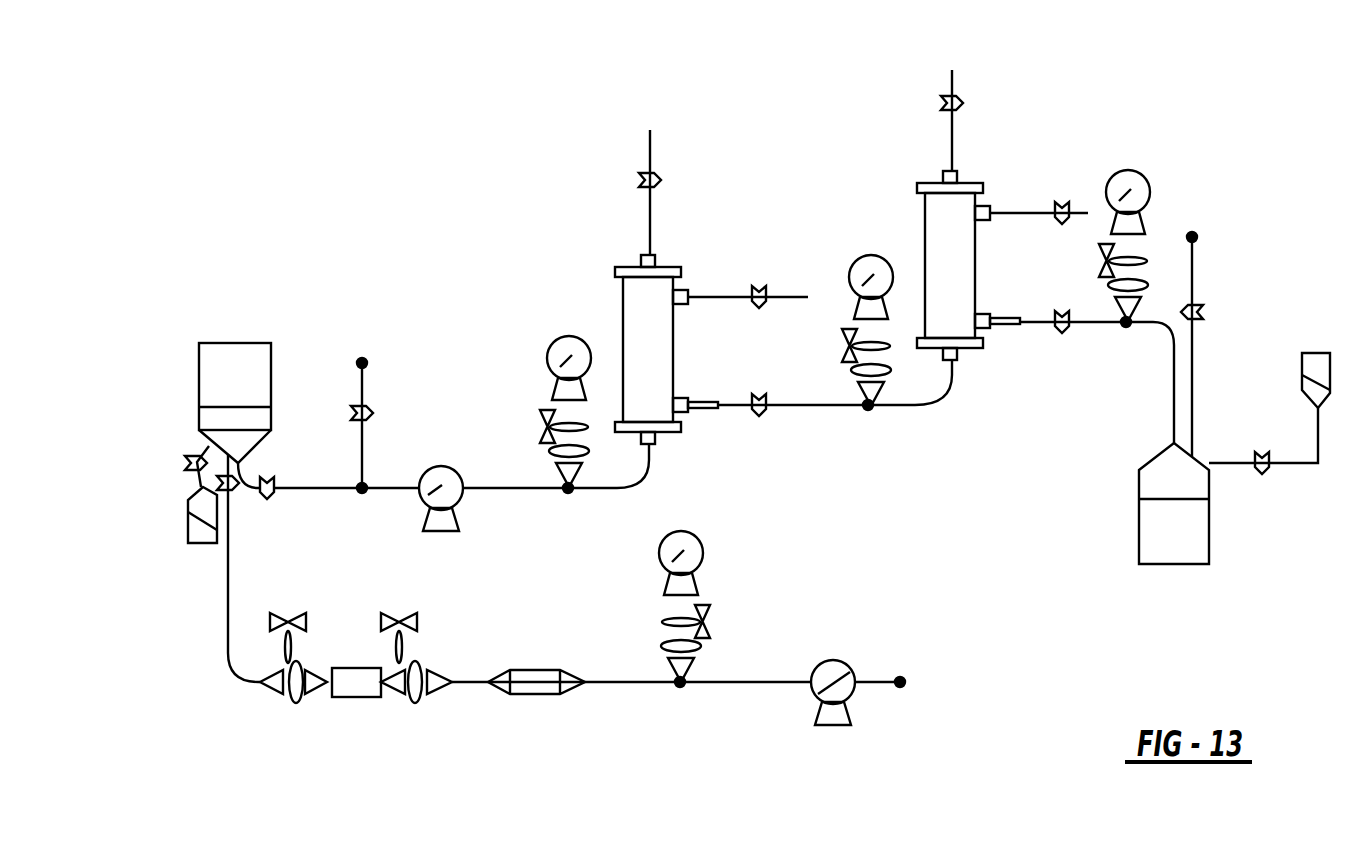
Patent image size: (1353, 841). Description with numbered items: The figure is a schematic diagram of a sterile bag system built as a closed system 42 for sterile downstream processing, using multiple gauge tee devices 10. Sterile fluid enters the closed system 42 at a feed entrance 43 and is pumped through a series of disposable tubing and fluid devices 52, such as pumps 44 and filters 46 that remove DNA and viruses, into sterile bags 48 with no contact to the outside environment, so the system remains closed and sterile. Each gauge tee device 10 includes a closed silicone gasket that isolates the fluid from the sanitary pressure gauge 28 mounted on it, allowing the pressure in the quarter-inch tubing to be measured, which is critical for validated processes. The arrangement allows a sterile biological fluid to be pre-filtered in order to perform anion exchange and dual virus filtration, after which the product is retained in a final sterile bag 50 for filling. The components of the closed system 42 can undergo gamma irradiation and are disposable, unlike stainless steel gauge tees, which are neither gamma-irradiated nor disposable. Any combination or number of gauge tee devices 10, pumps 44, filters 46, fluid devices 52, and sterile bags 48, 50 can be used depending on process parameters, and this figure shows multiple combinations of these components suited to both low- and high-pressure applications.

The gauge tee device 10 is at (569, 494).
The sanitary pressure gauge 28 is at (570, 332).
The closed system 42 is at (1142, 124).
The feed entrance 43 is at (910, 680).
The pump 44 is at (441, 537).
The filter 46 is at (352, 702).
The sterile bag 48 is at (279, 404).
The final sterile bag 50 is at (208, 552).
The fluid device 52 is at (613, 268).